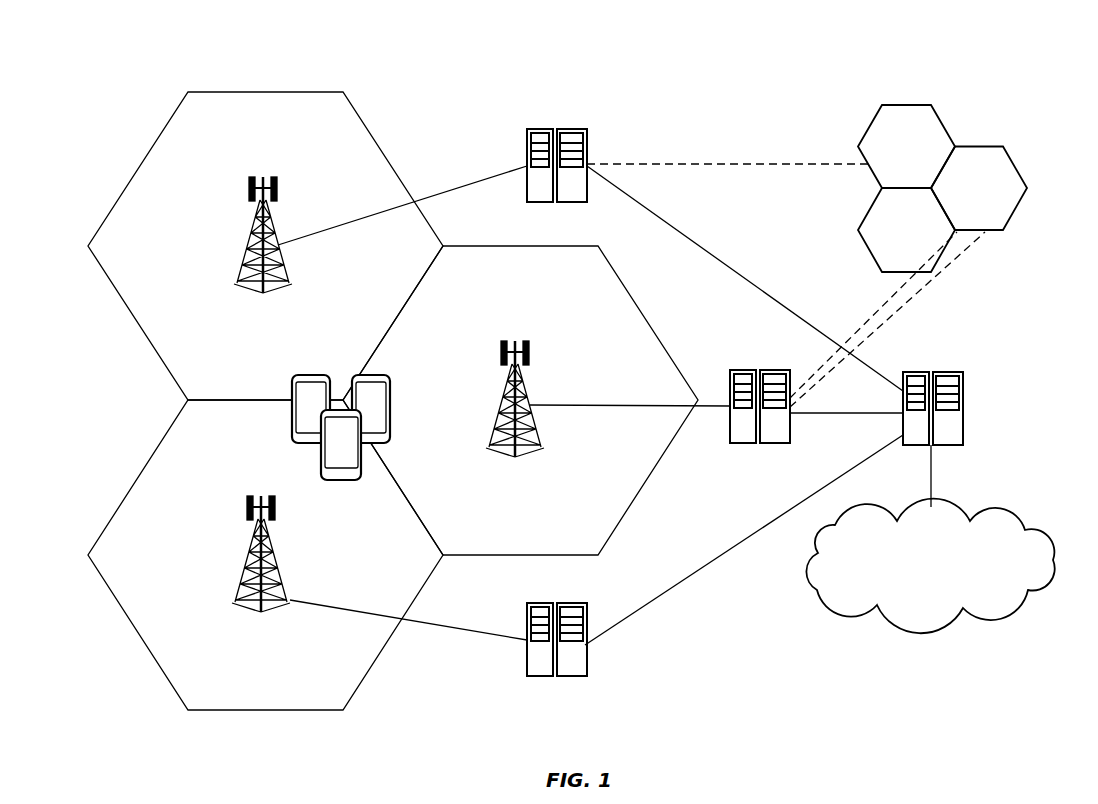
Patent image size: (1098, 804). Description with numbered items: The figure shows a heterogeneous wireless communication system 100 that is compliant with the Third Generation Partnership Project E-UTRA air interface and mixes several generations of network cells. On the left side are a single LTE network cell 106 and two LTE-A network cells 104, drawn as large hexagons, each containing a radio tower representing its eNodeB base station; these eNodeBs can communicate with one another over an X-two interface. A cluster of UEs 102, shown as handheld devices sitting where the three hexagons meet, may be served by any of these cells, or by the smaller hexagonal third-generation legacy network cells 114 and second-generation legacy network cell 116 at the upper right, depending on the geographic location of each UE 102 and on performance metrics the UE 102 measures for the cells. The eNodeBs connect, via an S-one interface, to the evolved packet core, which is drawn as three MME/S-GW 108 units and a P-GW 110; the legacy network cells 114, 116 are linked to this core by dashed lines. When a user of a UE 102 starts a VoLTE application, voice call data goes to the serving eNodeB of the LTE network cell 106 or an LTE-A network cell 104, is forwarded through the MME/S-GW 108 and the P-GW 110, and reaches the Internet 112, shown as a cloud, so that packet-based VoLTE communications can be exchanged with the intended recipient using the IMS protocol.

The heterogeneous wireless communication system 100 is at (70, 59).
The UE 102 is at (341, 432).
The LTE-A network cell 104 is at (401, 478).
The LTE network cell 106 is at (270, 246).
The MME/S-GW 108 is at (669, 397).
The P-GW 110 is at (963, 400).
The Internet 112 is at (882, 566).
The 3G legacy network cell 114 is at (906, 188).
The 2G legacy network cell 116 is at (995, 187).